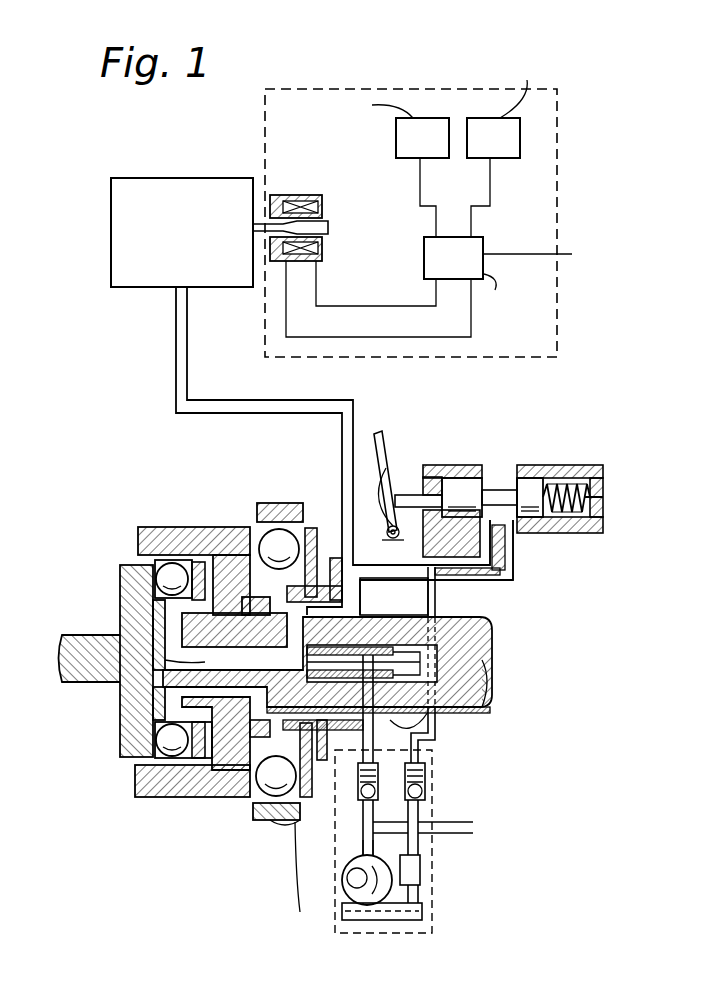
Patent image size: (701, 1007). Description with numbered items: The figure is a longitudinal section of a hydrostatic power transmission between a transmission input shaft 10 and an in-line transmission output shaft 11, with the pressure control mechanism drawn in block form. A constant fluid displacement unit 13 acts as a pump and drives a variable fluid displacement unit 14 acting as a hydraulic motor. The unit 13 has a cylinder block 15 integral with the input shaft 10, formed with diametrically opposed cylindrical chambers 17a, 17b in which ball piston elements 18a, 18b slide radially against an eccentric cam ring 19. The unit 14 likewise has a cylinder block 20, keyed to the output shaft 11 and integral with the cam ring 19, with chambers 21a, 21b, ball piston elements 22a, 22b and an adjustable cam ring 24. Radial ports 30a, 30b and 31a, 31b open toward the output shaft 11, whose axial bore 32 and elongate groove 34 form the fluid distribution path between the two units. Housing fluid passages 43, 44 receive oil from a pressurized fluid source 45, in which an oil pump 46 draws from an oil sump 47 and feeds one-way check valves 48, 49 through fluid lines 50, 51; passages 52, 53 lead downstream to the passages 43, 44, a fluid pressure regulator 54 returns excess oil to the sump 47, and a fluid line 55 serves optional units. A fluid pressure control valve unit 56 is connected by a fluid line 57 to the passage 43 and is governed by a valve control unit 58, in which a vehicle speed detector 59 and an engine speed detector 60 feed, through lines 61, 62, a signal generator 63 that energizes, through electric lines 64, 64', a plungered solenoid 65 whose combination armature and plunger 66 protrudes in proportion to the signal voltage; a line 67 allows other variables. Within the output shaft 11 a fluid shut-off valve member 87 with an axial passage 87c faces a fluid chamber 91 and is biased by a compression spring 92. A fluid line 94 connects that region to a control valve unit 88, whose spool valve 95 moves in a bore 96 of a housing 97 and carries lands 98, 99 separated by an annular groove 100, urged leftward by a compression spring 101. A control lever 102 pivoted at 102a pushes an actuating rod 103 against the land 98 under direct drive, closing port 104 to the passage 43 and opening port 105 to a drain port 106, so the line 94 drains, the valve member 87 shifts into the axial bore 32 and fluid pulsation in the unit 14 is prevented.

The transmission input shaft 10 is at (85, 635).
The transmission output shaft 11 is at (492, 620).
The constant fluid displacement unit 13 is at (143, 828).
The variable fluid displacement unit 14 is at (300, 880).
The cylinder block 15 is at (138, 530).
The cylindrical chamber 17a is at (155, 562).
The cylindrical chamber 17b is at (155, 745).
The ball piston element 18a is at (172, 562).
The ball piston element 18b is at (178, 790).
The cam ring 19 is at (158, 797).
The cylinder block 20 is at (310, 528).
The cylindrical chamber 21a is at (258, 612).
The cylindrical chamber 21b is at (232, 770).
The ball piston element 22a is at (290, 503).
The ball piston element 22b is at (290, 805).
The adjustable cam ring 24 is at (262, 503).
The radial port 30a is at (155, 602).
The radial port 30b is at (160, 692).
The radial port 31a is at (225, 560).
The radial port 31b is at (245, 797).
The axial bore 32 is at (121, 614).
The elongate groove 34 is at (205, 662).
The fluid passage 43 is at (335, 558).
The fluid passage 44 is at (300, 806).
The source of pressurized fluid 45 is at (446, 856).
The oil pump 46 is at (370, 896).
The oil sump 47 is at (422, 916).
The one-way check valve 48 is at (425, 783).
The one-way check valve 49 is at (363, 836).
The fluid line 50 is at (400, 823).
The fluid line 51 is at (363, 861).
The passage 52 is at (437, 600).
The passage 53 is at (373, 729).
The fluid pressure regulator 54 is at (420, 870).
The fluid line 55 is at (473, 827).
The fluid pressure control valve unit 56 is at (218, 178).
The fluid line 57 is at (323, 413).
The valve control unit 58 is at (372, 89).
The vehicle speed detector 59 is at (409, 150).
The engine speed detector 60 is at (480, 150).
The line 61 is at (420, 186).
The line 62 is at (490, 186).
The signal generator 63 is at (441, 270).
The electric line 64 is at (376, 283).
The electric line 64' is at (378, 299).
The plungered solenoid 65 is at (290, 195).
The combination armature and plunger 66 is at (263, 236).
The line 67 is at (527, 254).
The fluid shut-off valve member 87 is at (428, 720).
The axial passage 87c is at (275, 822).
The control valve unit 88 is at (510, 440).
The fluid chamber 91 is at (440, 664).
The compression spring 92 is at (493, 694).
The fluid line 94 is at (362, 598).
The spool valve 95 is at (522, 478).
The bore 96 is at (560, 517).
The housing 97 is at (570, 465).
The land 98 is at (462, 497).
The land 99 is at (530, 497).
The annular groove 100 is at (487, 478).
The compression spring 101 is at (585, 520).
The control lever 102 is at (378, 430).
The pivot 102a is at (388, 498).
The actuating rod 103 is at (412, 495).
The port 104 is at (513, 582).
The port 105 is at (513, 572).
The drain port 106 is at (507, 545).